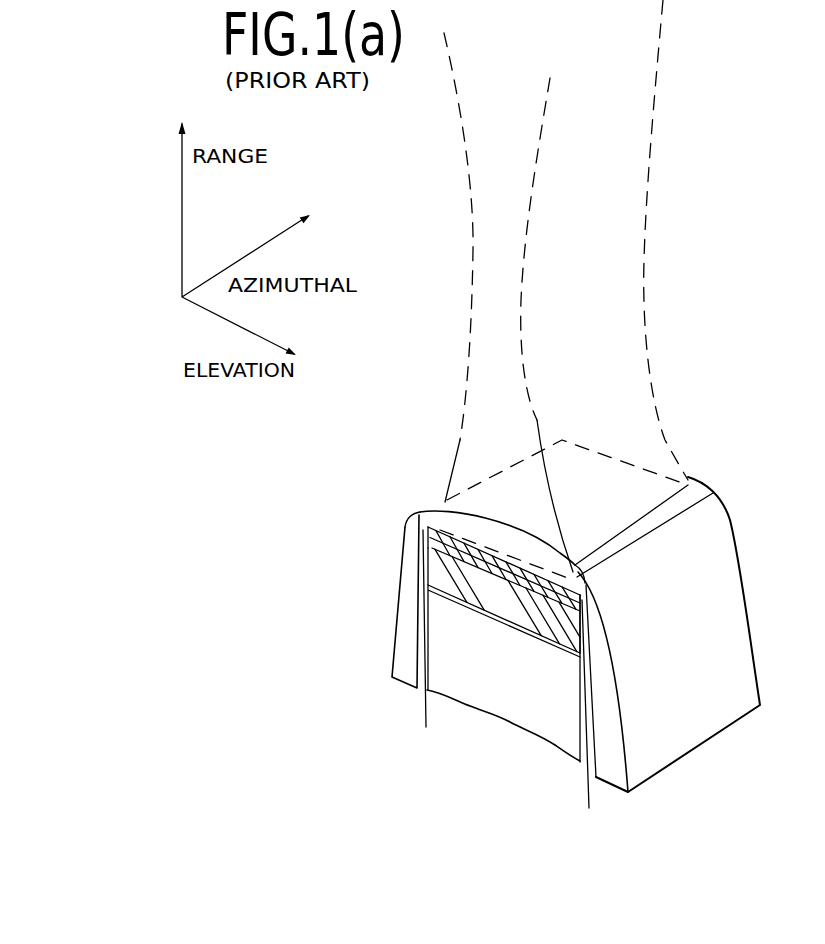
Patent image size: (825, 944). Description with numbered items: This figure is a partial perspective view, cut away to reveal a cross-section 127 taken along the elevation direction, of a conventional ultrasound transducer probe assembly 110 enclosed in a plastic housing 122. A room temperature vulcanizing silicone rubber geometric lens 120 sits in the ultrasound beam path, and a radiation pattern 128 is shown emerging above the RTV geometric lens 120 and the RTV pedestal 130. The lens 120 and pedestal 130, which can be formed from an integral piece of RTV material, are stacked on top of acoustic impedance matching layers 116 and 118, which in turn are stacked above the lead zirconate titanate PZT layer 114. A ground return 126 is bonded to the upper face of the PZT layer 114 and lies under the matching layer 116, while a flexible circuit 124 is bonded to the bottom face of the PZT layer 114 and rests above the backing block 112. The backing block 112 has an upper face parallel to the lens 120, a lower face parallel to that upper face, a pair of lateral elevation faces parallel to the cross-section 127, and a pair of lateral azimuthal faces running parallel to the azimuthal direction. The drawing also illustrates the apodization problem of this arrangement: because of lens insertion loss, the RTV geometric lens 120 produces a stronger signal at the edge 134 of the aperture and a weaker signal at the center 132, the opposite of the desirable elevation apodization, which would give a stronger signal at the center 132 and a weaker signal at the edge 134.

The ultrasound transducer probe assembly 110 is at (767, 535).
The backing block 112 is at (532, 720).
The lead zirconate titanate (PZT) layer 114 is at (583, 630).
The acoustic impedance matching layer 116 is at (430, 545).
The acoustic impedance matching layer 118 is at (427, 530).
The RTV geometric lens 120 is at (545, 543).
The plastic housing 122 is at (380, 661).
The flexible circuit 124 is at (600, 721).
The ground return 126 is at (434, 646).
The cross-section 127 is at (552, 692).
The radiation pattern 128 is at (468, 161).
The RTV pedestal 130 is at (592, 553).
The center of the aperture 132 is at (497, 517).
The edge of the aperture 134 is at (447, 496).